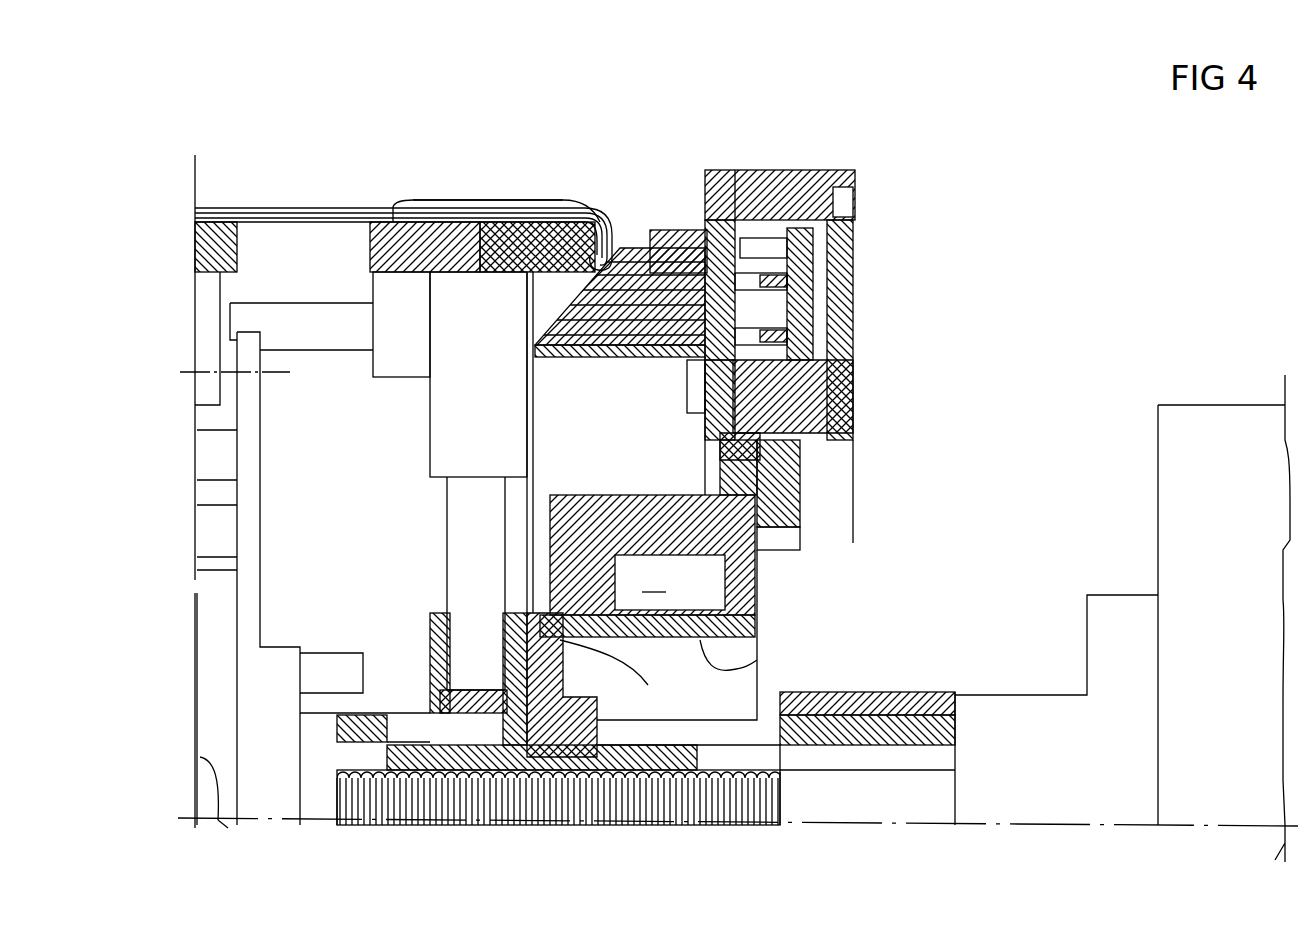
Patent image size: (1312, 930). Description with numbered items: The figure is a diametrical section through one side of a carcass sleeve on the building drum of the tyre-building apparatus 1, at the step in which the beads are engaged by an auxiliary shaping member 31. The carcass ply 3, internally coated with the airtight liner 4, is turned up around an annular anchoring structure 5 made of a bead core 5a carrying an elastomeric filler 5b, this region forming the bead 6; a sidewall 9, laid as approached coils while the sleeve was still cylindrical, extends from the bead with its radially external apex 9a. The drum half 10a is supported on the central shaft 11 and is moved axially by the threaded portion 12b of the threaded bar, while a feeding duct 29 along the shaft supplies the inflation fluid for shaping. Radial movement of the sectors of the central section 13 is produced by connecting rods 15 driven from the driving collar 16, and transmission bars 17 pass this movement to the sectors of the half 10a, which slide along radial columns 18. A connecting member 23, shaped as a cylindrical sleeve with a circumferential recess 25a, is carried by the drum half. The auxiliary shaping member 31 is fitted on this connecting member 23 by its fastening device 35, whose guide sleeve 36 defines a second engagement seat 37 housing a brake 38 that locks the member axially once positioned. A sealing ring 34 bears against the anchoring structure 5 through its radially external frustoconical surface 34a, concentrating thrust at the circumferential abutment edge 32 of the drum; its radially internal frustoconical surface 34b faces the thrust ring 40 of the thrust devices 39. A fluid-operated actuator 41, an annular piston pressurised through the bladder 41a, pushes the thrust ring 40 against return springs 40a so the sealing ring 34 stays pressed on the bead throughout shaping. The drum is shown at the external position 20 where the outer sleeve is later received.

The apparatus for building tyres 1 is at (1028, 220).
The carcass ply 3 is at (308, 218).
The liner 4 is at (268, 207).
The annular anchoring structure 5 is at (600, 242).
The bead core 5a is at (609, 252).
The elastomeric filler 5b is at (590, 210).
The bead 6 is at (566, 204).
The sidewall 9 is at (458, 200).
The radially external apex of the sidewall 9a is at (402, 205).
The half of the building drum 10a is at (428, 247).
The central shaft 11 is at (897, 745).
The threaded portion 12b is at (488, 828).
The central section of the building drum 13 is at (226, 210).
The connecting rod 15 is at (248, 464).
The driving collar 16 is at (222, 625).
The transmission bar 17 is at (323, 327).
The column 18 is at (465, 559).
The work station / position 20 is at (1213, 378).
The connecting member 23 is at (760, 669).
The recess 25a is at (600, 646).
The feeding duct 29 is at (232, 830).
The auxiliary shaping member 31 is at (826, 200).
The circumferential abutment edge 32 is at (616, 262).
The sealing ring 34 is at (546, 318).
The radially external frustoconical surface 34a is at (493, 222).
The radially internal frustoconical surface 34b is at (568, 358).
The fastening device 35 is at (770, 553).
The guide sleeve 36 is at (762, 598).
The second engagement seat 37 is at (755, 640).
The brake 38 is at (652, 555).
The thrust devices 39 is at (776, 210).
The thrust ring 40 is at (690, 235).
The return spring 40a is at (790, 268).
The fluid-operated actuator 41 is at (800, 296).
The bladder 41a is at (800, 341).